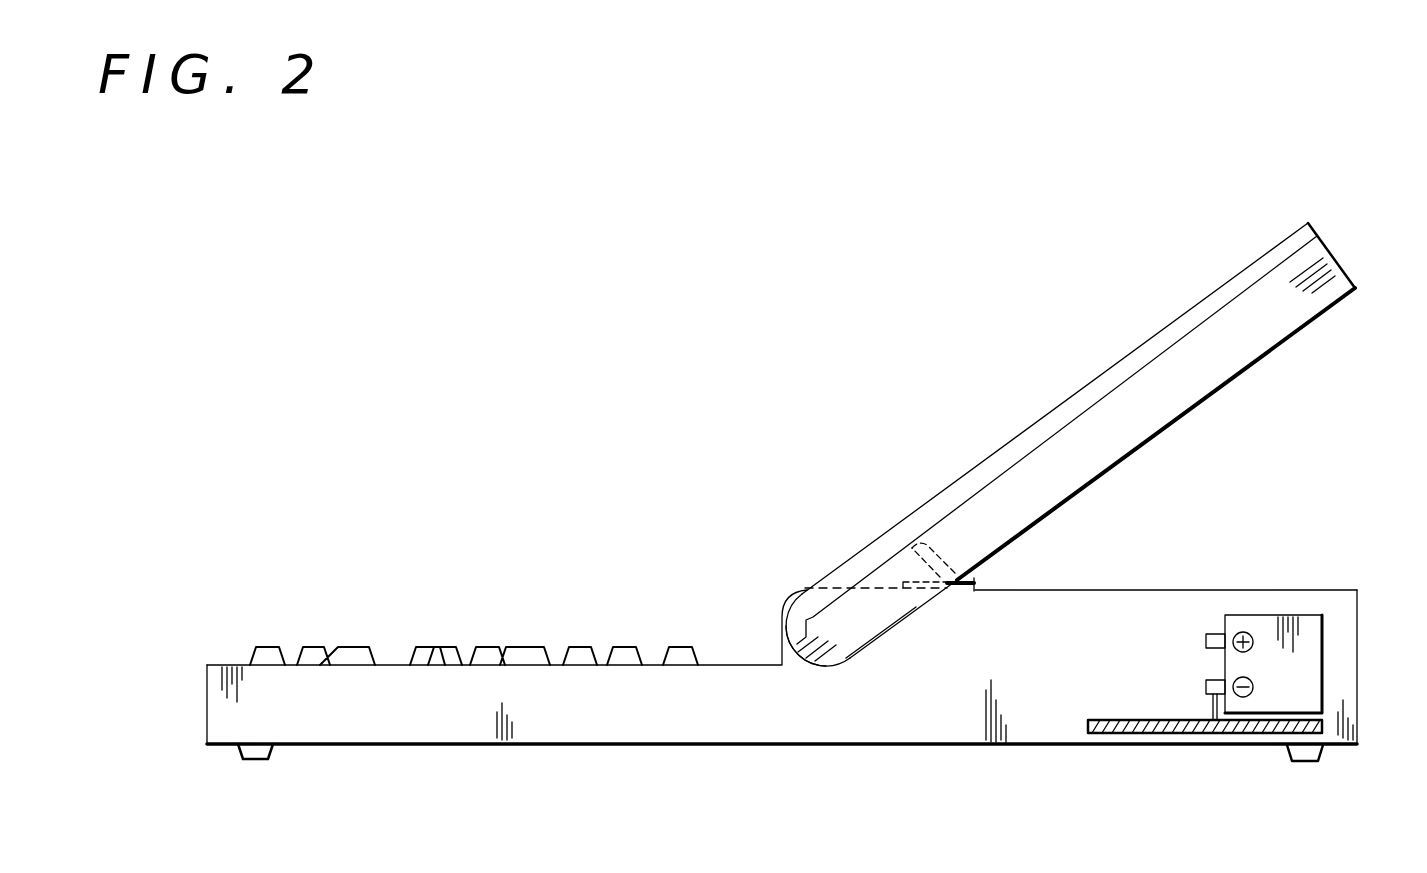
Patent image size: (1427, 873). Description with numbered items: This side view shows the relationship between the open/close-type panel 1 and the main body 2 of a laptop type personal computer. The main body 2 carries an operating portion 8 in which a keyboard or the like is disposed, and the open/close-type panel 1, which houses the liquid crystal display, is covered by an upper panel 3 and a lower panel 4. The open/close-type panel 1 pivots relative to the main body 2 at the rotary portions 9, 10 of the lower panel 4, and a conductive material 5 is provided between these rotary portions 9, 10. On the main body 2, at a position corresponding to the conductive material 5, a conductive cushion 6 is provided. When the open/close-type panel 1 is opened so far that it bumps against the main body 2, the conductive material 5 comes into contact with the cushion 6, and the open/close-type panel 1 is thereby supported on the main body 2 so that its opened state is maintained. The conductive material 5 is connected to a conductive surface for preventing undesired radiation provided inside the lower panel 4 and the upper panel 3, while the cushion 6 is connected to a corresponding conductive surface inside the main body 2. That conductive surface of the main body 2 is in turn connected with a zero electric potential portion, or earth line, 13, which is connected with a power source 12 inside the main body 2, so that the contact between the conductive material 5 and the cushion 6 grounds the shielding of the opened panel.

The open/close-type panel 1 is at (1264, 230).
The main body 2 is at (740, 724).
The upper panel 3 is at (1307, 241).
The lower panel 4 is at (1290, 323).
The conductive material 5 is at (930, 580).
The cushion 6 is at (977, 584).
The operating portion 8 is at (446, 647).
The rotary portion 9 is at (838, 622).
The rotary portion 10 is at (806, 626).
The power source 12 is at (1312, 678).
The zero electric potential portion (earth line) 13 is at (1217, 733).